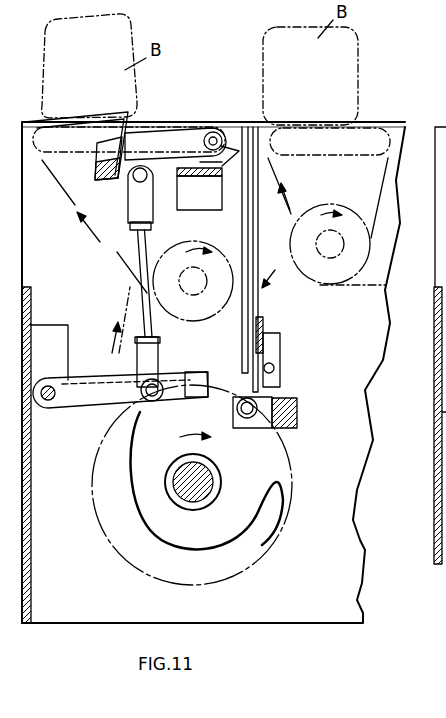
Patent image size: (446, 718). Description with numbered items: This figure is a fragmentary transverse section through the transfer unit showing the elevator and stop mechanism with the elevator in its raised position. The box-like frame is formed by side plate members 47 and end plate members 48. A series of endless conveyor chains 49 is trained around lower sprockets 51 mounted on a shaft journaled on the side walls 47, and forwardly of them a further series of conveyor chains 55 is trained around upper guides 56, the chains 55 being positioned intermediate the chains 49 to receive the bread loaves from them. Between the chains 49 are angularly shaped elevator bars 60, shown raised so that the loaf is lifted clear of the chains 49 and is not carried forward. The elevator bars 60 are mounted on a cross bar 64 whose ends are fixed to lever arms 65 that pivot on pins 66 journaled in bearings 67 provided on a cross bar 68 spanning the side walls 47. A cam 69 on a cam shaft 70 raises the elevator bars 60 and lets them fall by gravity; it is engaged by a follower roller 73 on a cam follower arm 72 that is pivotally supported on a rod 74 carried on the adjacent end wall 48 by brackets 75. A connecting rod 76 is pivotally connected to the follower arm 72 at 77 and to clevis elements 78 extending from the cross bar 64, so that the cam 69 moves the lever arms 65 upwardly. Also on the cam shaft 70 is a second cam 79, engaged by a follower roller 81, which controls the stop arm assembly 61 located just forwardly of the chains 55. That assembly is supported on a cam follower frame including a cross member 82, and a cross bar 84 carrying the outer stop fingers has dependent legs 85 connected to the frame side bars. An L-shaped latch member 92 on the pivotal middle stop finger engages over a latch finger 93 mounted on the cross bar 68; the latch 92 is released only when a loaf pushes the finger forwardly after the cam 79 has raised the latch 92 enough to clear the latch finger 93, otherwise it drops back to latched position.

The side plate member 47 is at (307, 607).
The end plate member 48 is at (30, 532).
The endless conveyor chain 49 is at (207, 124).
The lower sprocket 51 is at (203, 318).
The endless conveyor chain 55 is at (408, 134).
The upper guide 56 is at (365, 136).
The elevator bar 60 is at (133, 118).
The stop arm assembly 61 is at (274, 270).
The cross bar 64 is at (113, 183).
The lever arm 65 is at (185, 130).
The pin 66 is at (217, 133).
The bearing 67 is at (214, 177).
The cross bar 68 is at (186, 176).
The cam 69 is at (292, 512).
The cam shaft 70 is at (176, 506).
The cam follower arm 72 is at (90, 378).
The follower roller 73 is at (188, 372).
The rod 74 is at (47, 410).
The bracket 75 is at (37, 338).
The connecting rod 76 is at (140, 248).
The pivot connection 77 is at (106, 412).
The clevis element 78 is at (124, 160).
The second cam 79 is at (253, 467).
The follower roller 81 is at (187, 415).
The cross member 82 is at (297, 412).
The cross bar 84 is at (262, 328).
The dependent leg 85 is at (277, 395).
The L-shaped latch member 92 is at (247, 133).
The latch finger 93 is at (251, 128).